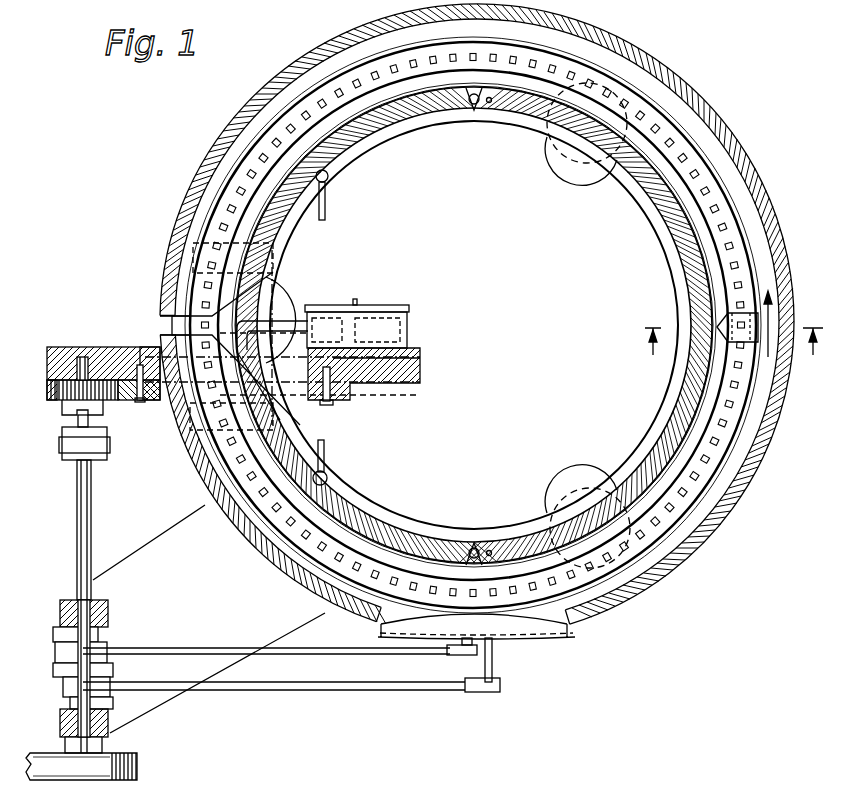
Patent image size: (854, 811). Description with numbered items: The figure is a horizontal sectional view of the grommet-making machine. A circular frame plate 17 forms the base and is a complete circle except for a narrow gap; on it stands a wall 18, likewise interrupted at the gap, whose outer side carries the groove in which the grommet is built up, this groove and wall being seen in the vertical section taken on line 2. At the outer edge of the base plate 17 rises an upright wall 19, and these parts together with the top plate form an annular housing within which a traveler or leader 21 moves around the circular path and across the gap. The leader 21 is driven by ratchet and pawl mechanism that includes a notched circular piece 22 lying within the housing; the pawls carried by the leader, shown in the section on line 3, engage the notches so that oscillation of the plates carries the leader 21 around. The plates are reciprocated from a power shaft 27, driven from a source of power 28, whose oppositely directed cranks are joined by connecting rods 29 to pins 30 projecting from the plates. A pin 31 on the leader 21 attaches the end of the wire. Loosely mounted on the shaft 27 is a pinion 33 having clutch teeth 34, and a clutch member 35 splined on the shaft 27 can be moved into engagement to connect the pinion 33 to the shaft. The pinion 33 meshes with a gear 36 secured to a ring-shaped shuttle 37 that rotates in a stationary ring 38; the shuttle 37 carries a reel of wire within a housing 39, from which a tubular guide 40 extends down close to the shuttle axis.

The section line 2— 2 is at (731, 358).
The section line 3— 3 is at (210, 417).
The frame plate 17 is at (623, 477).
The wall 18 is at (690, 404).
The upright wall 19 is at (783, 398).
The traveler or leader 21 is at (700, 300).
The circular piece 22 is at (757, 441).
The power shaft 27 is at (78, 512).
The source of power 28 is at (57, 770).
The connecting rod 29 is at (280, 690).
The pin 30 is at (493, 645).
The pin 31 is at (728, 338).
The pinion 33 is at (53, 397).
The clutch teeth 34 is at (100, 408).
The clutch member 35 is at (97, 458).
The gear 36 is at (122, 360).
The ring-shaped shuttle 37 is at (88, 357).
The stationary ring 38 is at (52, 348).
The housing 39 is at (343, 305).
The tubular guide 40 is at (283, 322).